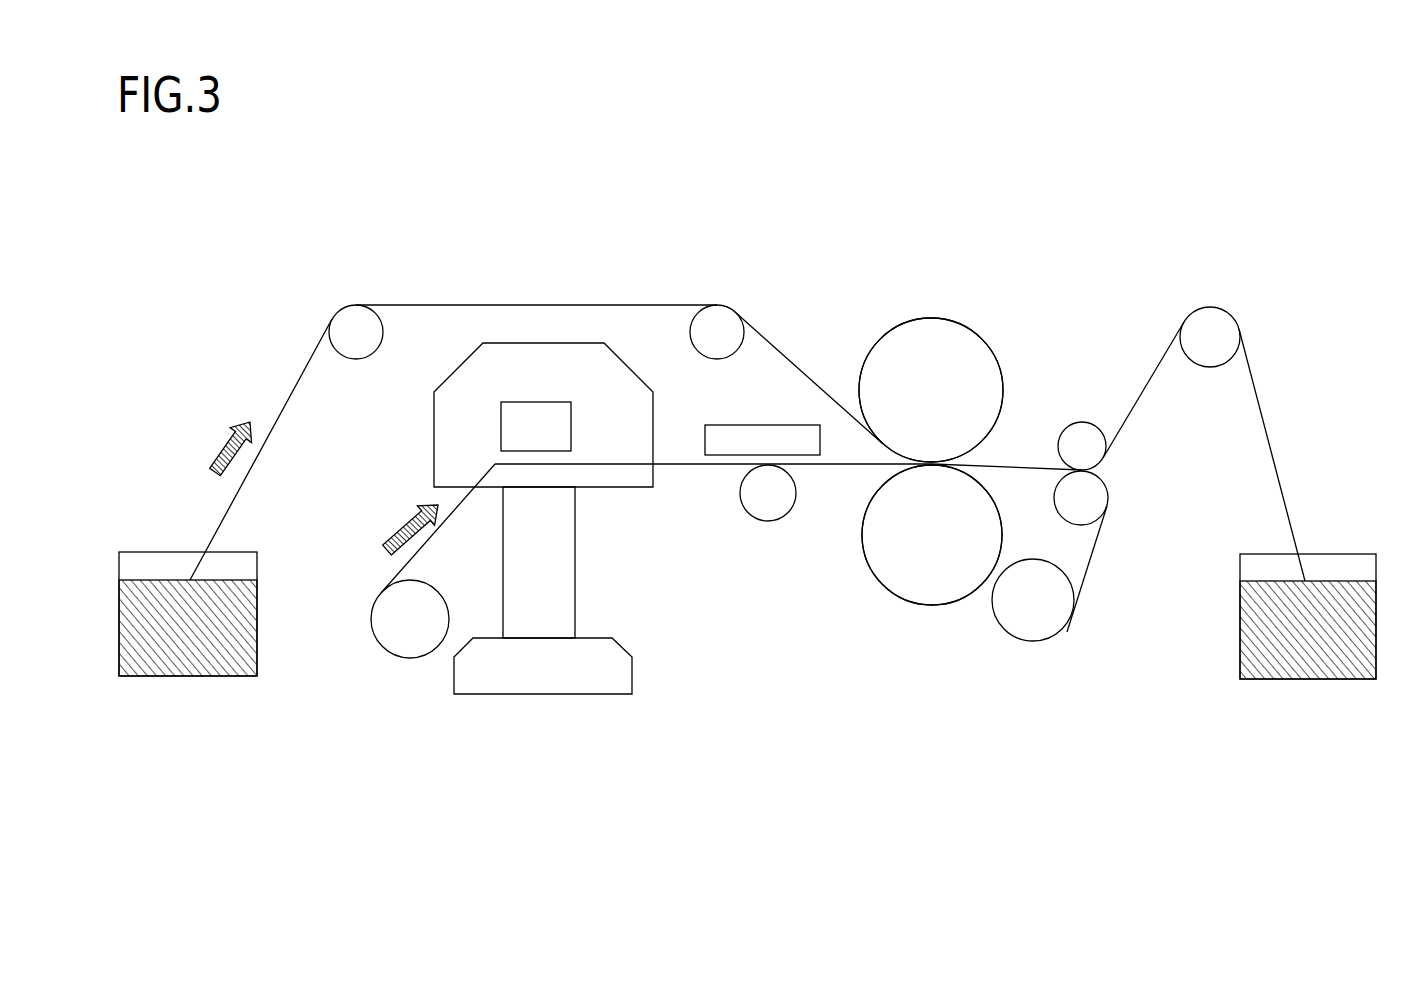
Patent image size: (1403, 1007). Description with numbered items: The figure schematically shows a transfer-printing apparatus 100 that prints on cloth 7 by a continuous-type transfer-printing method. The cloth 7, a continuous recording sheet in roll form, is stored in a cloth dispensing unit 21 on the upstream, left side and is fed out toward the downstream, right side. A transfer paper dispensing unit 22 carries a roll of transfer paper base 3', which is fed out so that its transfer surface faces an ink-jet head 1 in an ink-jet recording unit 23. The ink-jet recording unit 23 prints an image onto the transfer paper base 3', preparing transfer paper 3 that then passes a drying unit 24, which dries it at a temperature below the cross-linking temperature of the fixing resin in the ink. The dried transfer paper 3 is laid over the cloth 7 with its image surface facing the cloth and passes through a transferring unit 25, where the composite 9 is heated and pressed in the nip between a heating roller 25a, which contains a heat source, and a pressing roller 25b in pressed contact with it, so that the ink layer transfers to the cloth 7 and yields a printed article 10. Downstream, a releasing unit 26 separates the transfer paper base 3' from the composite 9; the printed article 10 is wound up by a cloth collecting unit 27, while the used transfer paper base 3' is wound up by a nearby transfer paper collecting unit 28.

The transfer-printing apparatus 100 is at (1087, 235).
The ink-jet head 1 is at (533, 414).
The transfer paper 3 is at (788, 501).
The transfer paper base 3' is at (764, 548).
The cloth 7 is at (300, 378).
The composite 9 is at (1025, 463).
The printed article 10 is at (1143, 387).
The cloth dispensing unit 21 is at (164, 547).
The transfer paper dispensing unit 22 is at (388, 651).
The ink-jet recording unit 23 is at (604, 513).
The drying unit 24 is at (760, 440).
The transferring unit 25 is at (855, 493).
The heating roller 25a is at (928, 606).
The pressing roller 25b is at (925, 318).
The releasing unit 26 is at (1119, 478).
The cloth collecting unit 27 is at (1340, 550).
The transfer paper collecting unit 28 is at (1045, 637).